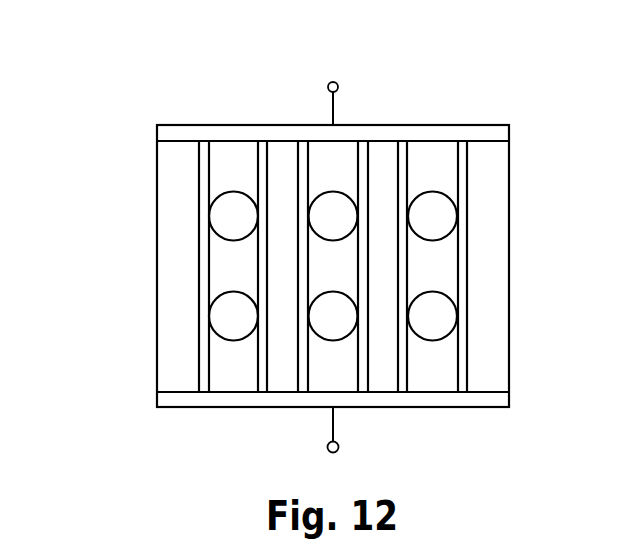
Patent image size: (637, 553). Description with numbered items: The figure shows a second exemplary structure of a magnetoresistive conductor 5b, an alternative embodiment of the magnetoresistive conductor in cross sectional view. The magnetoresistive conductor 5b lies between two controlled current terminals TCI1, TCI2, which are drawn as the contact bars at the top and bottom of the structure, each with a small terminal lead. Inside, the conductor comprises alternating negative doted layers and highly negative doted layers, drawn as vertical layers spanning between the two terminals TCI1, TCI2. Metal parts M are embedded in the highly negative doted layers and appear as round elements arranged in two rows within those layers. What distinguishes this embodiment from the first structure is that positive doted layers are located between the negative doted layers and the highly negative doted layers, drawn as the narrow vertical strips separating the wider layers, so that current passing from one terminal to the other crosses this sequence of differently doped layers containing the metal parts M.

The magnetoresistive conductor 5b is at (112, 55).
The controlled current terminal TCI1 is at (367, 100).
The controlled current terminal TCI2 is at (368, 434).
The metal part M is at (438, 215).